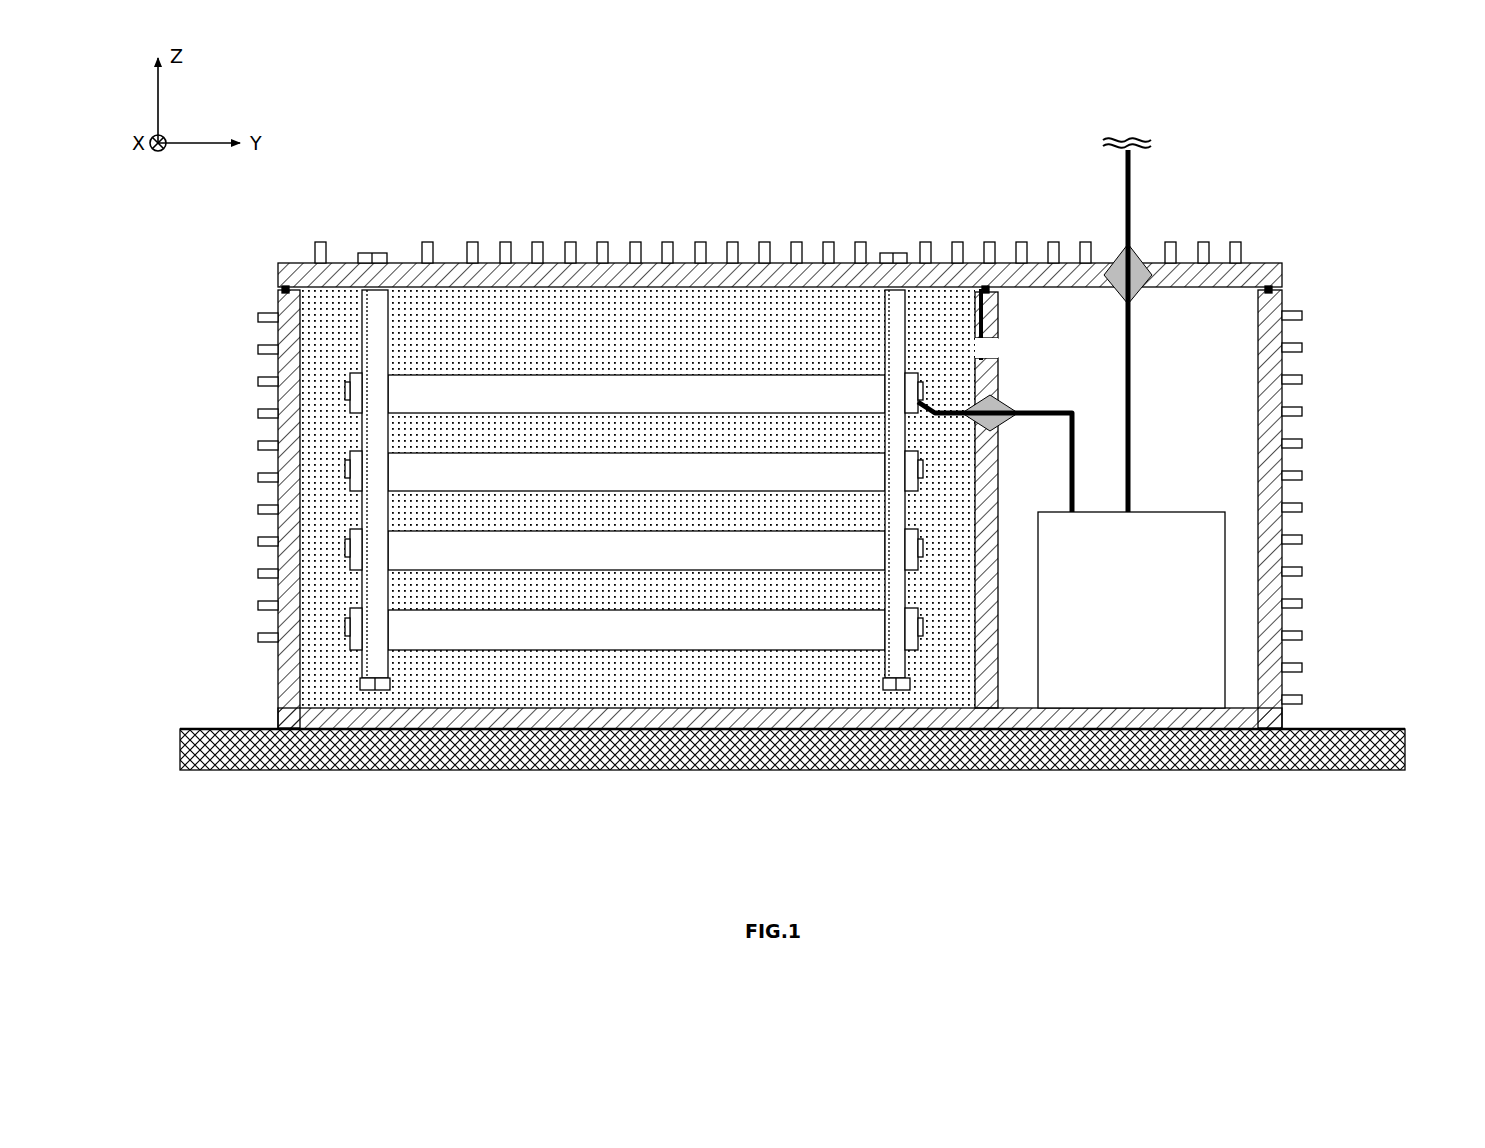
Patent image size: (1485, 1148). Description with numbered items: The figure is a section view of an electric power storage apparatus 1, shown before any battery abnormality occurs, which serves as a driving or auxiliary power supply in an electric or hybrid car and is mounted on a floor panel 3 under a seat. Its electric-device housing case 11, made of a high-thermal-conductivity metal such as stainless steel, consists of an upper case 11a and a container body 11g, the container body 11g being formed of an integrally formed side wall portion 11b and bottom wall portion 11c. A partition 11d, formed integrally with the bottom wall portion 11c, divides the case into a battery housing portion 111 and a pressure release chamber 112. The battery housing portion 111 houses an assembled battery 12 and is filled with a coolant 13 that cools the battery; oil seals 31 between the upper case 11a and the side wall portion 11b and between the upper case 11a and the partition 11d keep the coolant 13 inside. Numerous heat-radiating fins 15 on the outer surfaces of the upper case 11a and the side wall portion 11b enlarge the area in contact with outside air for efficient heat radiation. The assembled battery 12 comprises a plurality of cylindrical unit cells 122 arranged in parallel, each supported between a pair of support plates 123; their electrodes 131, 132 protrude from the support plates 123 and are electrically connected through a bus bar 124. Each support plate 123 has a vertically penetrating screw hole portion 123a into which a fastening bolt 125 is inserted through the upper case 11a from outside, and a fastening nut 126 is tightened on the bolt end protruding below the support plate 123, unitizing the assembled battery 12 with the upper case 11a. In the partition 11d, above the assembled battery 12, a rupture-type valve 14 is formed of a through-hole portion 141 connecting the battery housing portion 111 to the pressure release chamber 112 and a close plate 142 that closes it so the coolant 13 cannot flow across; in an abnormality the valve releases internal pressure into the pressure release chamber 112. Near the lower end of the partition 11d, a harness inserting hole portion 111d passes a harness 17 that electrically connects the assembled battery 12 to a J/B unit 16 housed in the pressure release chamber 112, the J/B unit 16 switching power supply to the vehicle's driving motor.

The electric power storage apparatus 1 is at (1232, 172).
The floor panel 3 is at (1390, 747).
The electric-device housing case 11 is at (832, 496).
The battery housing portion 111 is at (775, 285).
The harness inserting hole portion 111d is at (992, 396).
The pressure release chamber 112 is at (1182, 278).
The upper case 11a is at (1252, 278).
The side wall portion 11b is at (1270, 547).
The bottom wall portion 11c is at (1218, 722).
The partition 11d is at (990, 670).
The container body 11g is at (1270, 712).
The assembled battery 12 is at (567, 509).
The cylindrical unit cells 122 is at (768, 630).
The support plates 123 is at (384, 602).
The screw hole portion 123a is at (360, 307).
The bus bar 124 is at (360, 545).
The fastening bolt 125 is at (372, 262).
The fastening nut 126 is at (382, 691).
The coolant 13 is at (710, 320).
The electrode 131 is at (352, 600).
The electrode 132 is at (910, 665).
The rupture-type valve 14 is at (956, 257).
The through-hole portion 141 is at (978, 333).
The close plate 142 is at (982, 340).
The heat-radiating fins 15 is at (1302, 630).
The J/B unit 16 is at (1200, 676).
The harness 17 is at (1073, 415).
The oil seal 31 is at (284, 288).